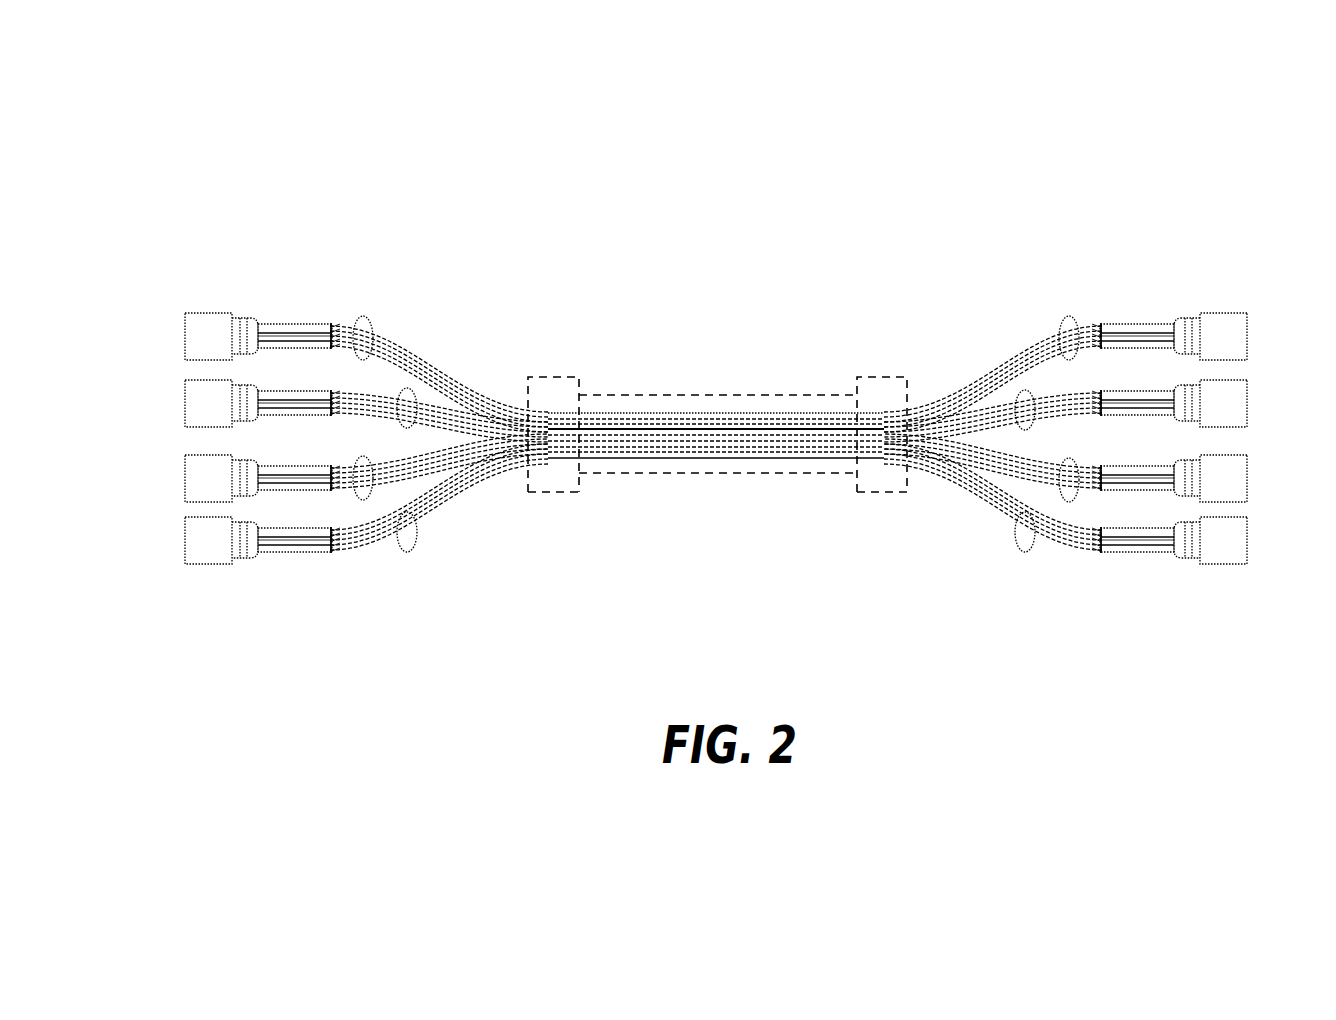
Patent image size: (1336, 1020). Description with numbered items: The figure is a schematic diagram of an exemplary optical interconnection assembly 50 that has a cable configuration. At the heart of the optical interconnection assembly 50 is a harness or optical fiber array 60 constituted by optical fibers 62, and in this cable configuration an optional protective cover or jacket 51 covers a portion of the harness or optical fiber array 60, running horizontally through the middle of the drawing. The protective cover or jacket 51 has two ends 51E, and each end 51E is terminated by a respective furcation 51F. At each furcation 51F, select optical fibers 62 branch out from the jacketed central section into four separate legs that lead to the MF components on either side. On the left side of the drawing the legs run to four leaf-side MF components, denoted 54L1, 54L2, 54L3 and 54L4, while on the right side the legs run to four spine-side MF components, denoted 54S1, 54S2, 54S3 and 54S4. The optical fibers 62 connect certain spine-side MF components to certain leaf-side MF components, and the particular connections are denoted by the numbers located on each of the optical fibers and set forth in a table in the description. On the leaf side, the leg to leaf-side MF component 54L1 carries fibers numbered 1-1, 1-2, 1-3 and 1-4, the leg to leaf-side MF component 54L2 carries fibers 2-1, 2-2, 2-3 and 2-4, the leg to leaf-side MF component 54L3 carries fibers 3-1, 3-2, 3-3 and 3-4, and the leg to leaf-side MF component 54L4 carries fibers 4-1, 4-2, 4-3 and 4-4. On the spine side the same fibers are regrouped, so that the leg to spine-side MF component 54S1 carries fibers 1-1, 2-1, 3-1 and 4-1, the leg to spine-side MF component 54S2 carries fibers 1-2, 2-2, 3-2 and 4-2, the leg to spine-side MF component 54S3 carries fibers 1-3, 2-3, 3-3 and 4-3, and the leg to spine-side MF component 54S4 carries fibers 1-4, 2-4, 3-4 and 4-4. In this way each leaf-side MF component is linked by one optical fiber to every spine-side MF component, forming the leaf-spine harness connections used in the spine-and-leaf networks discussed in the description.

The optical interconnection assembly 50 is at (203, 147).
The protective cover or jacket 51 is at (678, 474).
The end 51E is at (548, 376).
The furcation 51F is at (560, 493).
The leaf-side MF component 54L1 is at (183, 338).
The leaf-side MF component 54L2 is at (183, 405).
The leaf-side MF component 54L3 is at (183, 480).
The leaf-side MF component 54L4 is at (183, 542).
The spine-side MF component 54S1 is at (1247, 338).
The spine-side MF component 54S2 is at (1247, 405).
The spine-side MF component 54S3 is at (1247, 480).
The spine-side MF component 54S4 is at (1247, 542).
The harness or optical fiber array 60 is at (640, 413).
The optical fibers 62 is at (493, 392).
The optical fiber connection number 1-1 is at (361, 316).
The optical fiber connection number 1-2 is at (1025, 390).
The optical fiber connection number 1-3 is at (1020, 552).
The optical fiber connection number 1-4 is at (1078, 605).
The optical fiber connection number 2-1 is at (407, 388).
The optical fiber connection number 2-2 is at (729, 196).
The optical fiber connection number 2-3 is at (729, 432).
The optical fiber connection number 2-4 is at (774, 462).
The optical fiber connection number 3-1 is at (363, 500).
The optical fiber connection number 3-2 is at (684, 414).
The optical fiber connection number 3-3 is at (684, 650).
The optical fiber connection number 3-4 is at (729, 681).
The optical fiber connection number 4-1 is at (407, 552).
The optical fiber connection number 4-2 is at (729, 445).
The optical fiber connection number 4-3 is at (729, 681).
The optical fiber connection number 4-4 is at (774, 710).